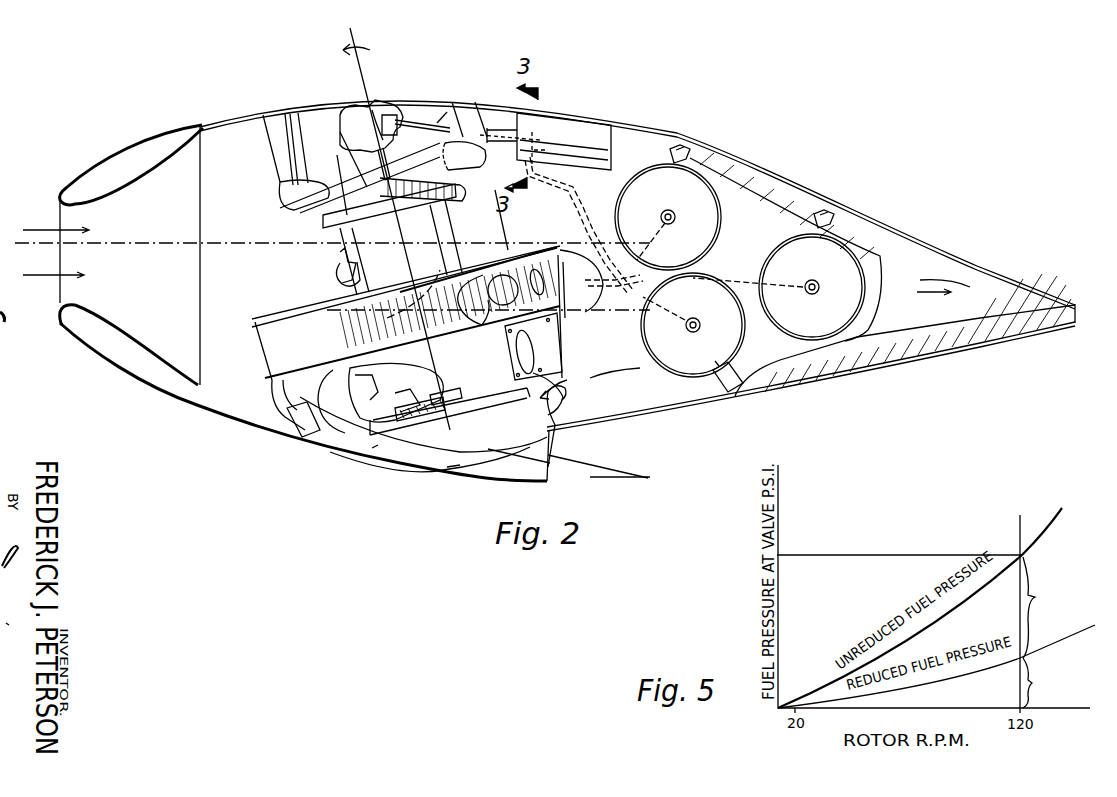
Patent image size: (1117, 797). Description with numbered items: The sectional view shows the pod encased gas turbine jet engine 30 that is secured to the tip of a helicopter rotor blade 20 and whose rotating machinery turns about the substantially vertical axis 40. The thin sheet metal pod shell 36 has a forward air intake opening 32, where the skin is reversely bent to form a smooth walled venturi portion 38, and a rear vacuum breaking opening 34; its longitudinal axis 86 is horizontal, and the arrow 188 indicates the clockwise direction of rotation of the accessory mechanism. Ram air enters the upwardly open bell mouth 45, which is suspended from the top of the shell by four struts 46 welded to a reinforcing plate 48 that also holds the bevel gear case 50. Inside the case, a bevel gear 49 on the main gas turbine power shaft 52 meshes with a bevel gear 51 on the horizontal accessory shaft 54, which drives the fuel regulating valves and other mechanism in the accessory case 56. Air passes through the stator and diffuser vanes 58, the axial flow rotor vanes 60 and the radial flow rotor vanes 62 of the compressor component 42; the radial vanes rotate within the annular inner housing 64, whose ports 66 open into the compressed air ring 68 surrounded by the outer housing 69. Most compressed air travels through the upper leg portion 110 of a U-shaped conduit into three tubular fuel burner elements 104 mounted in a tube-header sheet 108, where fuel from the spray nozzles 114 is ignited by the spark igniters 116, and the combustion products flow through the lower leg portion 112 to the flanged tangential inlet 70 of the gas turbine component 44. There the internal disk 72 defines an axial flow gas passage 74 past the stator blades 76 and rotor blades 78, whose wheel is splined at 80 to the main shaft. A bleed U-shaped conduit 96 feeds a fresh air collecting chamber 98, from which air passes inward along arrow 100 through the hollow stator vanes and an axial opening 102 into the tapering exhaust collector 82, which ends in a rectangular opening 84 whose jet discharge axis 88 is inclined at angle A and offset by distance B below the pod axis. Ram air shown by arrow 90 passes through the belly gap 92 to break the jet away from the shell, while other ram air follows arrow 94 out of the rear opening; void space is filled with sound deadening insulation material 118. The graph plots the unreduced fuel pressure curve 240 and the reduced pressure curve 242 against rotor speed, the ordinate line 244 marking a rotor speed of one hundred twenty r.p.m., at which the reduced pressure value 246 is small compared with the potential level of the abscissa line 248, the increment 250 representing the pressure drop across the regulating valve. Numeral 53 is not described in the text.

In FIG. 2, the blade 20 is at (387, 318).
In FIG. 2, the gas turbine jet engine 30 is at (139, 134).
In FIG. 2, the air intake opening 32 is at (60, 302).
In FIG. 2, the vacuum breaking opening 34 is at (1097, 313).
In FIG. 2, the pod shell 36 is at (175, 400).
In FIG. 2, the venturi portion 38 is at (152, 347).
In FIG. 2, the vertical axis 40 is at (352, 28).
In FIG. 2, the compressor component 42 is at (527, 253).
In FIG. 2, the gas turbine component 44 is at (333, 397).
In FIG. 2, the bell mouth 45 is at (292, 194).
In FIG. 2, the struts 46 is at (268, 127).
In FIG. 2, the reinforcing plate 48 is at (293, 110).
In FIG. 2, the bevel gear 49 is at (360, 133).
In FIG. 2, the bevel gear case 50 is at (387, 110).
In FIG. 2, the bevel gear 51 is at (383, 110).
In FIG. 2, the main gas turbine power shaft 52 is at (325, 212).
In FIG. 2, the piston 53 is at (420, 423).
In FIG. 2, the accessory shaft 54 is at (410, 113).
In FIG. 2, the accessory case 56 is at (583, 130).
In FIG. 2, the stator vanes and diffuser vanes 58 is at (340, 263).
In FIG. 2, the rotor vanes 60 is at (347, 250).
In FIG. 2, the rotor vanes 62 is at (353, 283).
In FIG. 2, the annular inner housing 64 is at (487, 263).
In FIG. 2, the ports 66 is at (500, 300).
In FIG. 2, the compressed air ring 68 is at (568, 312).
In FIG. 2, the circumferential outer housing 69 is at (585, 287).
In FIG. 2, the flanged tangential inlet 70 is at (563, 372).
In FIG. 2, the internal disk 72 is at (372, 361).
In FIG. 2, the axial flow gas passage 74 is at (377, 377).
In FIG. 2, the stator blades 76 is at (400, 393).
In FIG. 2, the rotor blades 78 is at (385, 430).
In FIG. 2, the spline 80 is at (440, 385).
In FIG. 2, the exhaust collector 82 is at (447, 467).
In FIG. 2, the rectangular opening 84 is at (552, 475).
In FIG. 2, the longitudinal axis 86 is at (22, 240).
In FIG. 2, the jet discharge axis 88 is at (611, 464).
In FIG. 2, the arrow 90 is at (567, 390).
In FIG. 2, the gap 92 is at (558, 430).
In FIG. 2, the arrow 94 is at (936, 301).
In FIG. 2, the U-shaped conduit 96 is at (300, 423).
In FIG. 2, the fresh air collecting chamber 98 is at (372, 430).
In FIG. 2, the arrow 100 is at (420, 378).
In FIG. 2, the axial opening 102 is at (382, 447).
In FIG. 2, the tubular fuel burner elements 104 is at (718, 190).
In FIG. 2, the tube-header sheet 108 is at (767, 217).
In FIG. 2, the upper leg portion 110 is at (602, 212).
In FIG. 2, the lower leg portion 112 is at (623, 373).
In FIG. 2, the fuel spray nozzle 114 is at (687, 333).
In FIG. 2, the spark igniter 116 is at (672, 153).
In FIG. 2, the sound deadening insulation material 118 is at (882, 262).
In FIG. 2, the arrow 188 is at (436, 122).
In FIG. 5, the curve 240 is at (1040, 533).
In FIG. 5, the curve 242 is at (932, 683).
In FIG. 5, the ordinate representing line 244 is at (1017, 570).
In FIG. 5, the reduced pressure value 246 is at (1032, 683).
In FIG. 5, the abscissa representing line 248 is at (805, 553).
In FIG. 5, the pressure drop increment 250 is at (1035, 597).